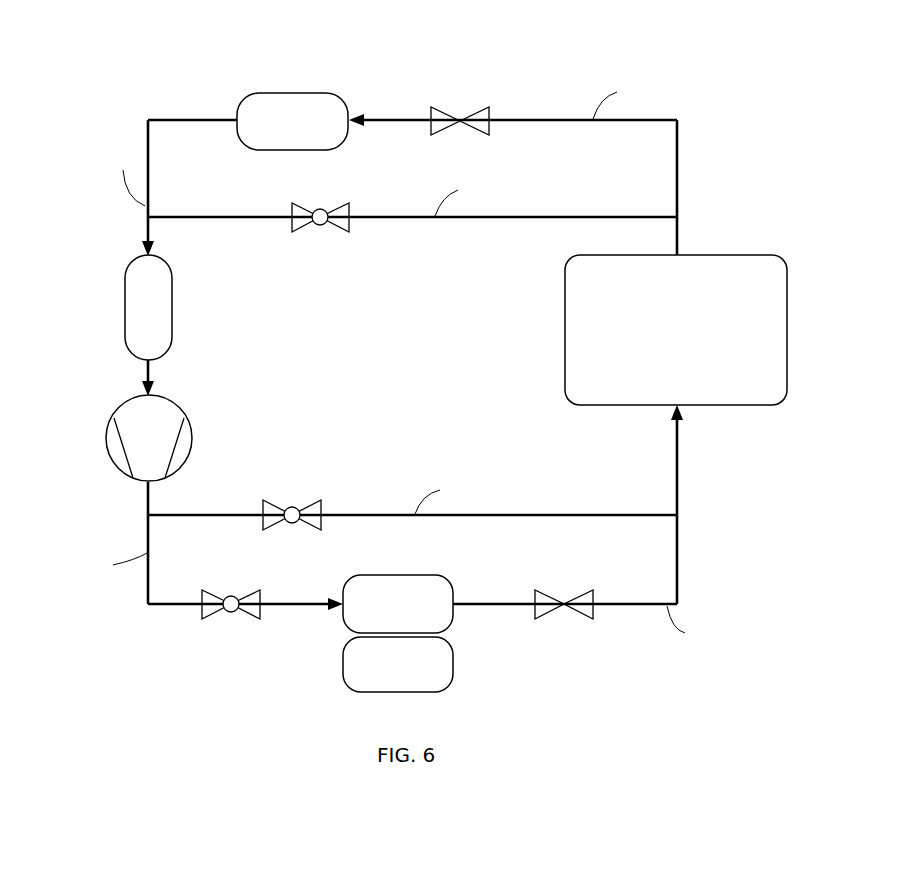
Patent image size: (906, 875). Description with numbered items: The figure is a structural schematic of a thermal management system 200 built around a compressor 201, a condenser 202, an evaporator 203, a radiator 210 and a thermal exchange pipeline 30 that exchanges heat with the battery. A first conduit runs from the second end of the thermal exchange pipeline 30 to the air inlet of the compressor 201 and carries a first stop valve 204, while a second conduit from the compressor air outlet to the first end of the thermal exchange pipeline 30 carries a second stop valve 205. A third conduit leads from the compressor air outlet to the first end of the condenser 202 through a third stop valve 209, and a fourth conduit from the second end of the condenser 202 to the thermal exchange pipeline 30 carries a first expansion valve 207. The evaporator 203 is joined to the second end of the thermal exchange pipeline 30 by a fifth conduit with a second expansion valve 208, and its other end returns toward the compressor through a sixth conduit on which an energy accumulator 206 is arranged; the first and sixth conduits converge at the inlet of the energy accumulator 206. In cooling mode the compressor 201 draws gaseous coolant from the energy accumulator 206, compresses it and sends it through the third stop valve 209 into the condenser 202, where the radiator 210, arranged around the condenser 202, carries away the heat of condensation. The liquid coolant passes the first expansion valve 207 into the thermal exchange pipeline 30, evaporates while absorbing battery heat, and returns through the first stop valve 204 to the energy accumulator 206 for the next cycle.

The thermal management system 200 is at (138, 30).
The compressor 201 is at (116, 410).
The condenser 202 is at (413, 575).
The evaporator 203 is at (294, 93).
The first stop valve 204 is at (320, 225).
The second stop valve 205 is at (293, 507).
The energy accumulator 206 is at (125, 300).
The first expansion valve 207 is at (566, 608).
The second expansion valve 208 is at (460, 107).
The third stop valve 209 is at (231, 612).
The radiator 210 is at (450, 672).
The thermal exchange pipeline 30 is at (676, 330).